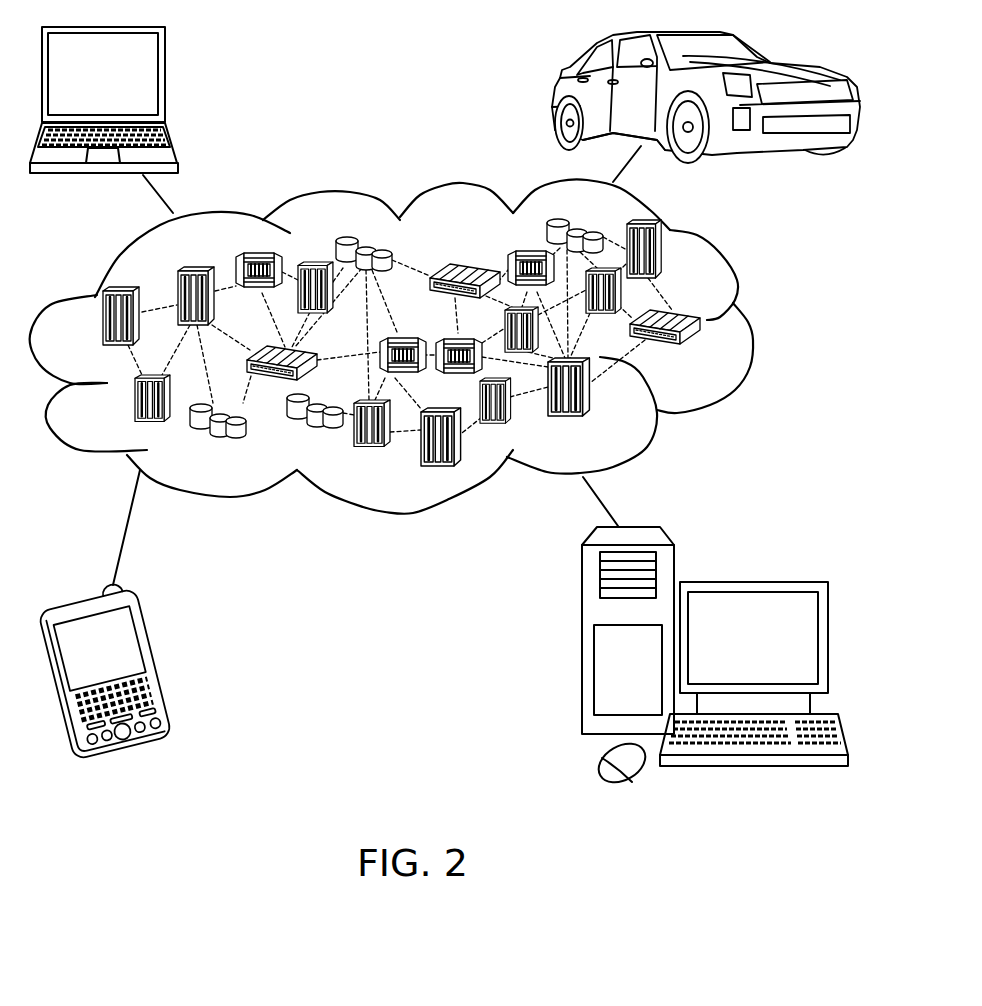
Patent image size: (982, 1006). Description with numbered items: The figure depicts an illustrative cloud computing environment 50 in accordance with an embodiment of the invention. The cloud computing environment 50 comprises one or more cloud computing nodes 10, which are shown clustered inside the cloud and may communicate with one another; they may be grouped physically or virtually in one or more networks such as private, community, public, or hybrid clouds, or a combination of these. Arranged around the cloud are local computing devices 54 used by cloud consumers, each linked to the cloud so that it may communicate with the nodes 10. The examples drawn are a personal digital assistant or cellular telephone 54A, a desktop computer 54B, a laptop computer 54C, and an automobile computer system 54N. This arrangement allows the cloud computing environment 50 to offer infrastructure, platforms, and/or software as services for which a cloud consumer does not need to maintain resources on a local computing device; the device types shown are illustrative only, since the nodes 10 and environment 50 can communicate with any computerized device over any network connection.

The cloud computing node 10 is at (730, 370).
The cloud computing environment 50 is at (752, 323).
The local computing devices 54 is at (180, 54).
The personal digital assistant or cellular telephone 54A is at (157, 670).
The desktop computer 54B is at (770, 580).
The laptop computer 54C is at (165, 73).
The automobile computer system 54N is at (553, 92).